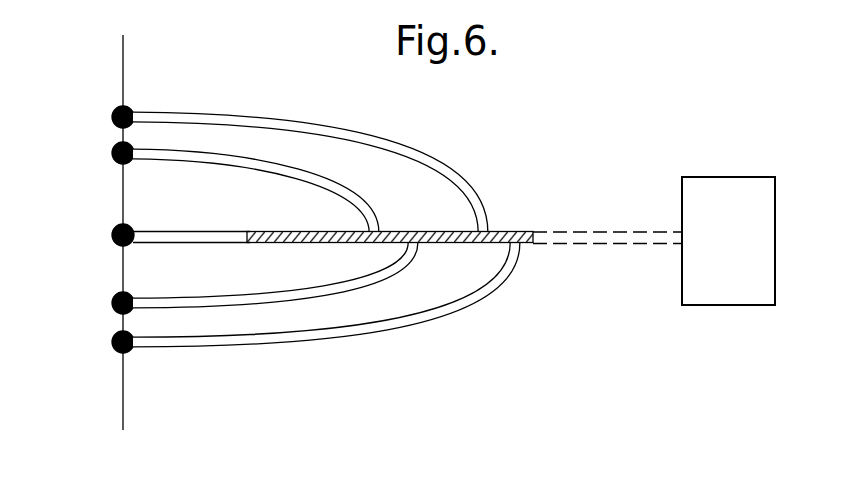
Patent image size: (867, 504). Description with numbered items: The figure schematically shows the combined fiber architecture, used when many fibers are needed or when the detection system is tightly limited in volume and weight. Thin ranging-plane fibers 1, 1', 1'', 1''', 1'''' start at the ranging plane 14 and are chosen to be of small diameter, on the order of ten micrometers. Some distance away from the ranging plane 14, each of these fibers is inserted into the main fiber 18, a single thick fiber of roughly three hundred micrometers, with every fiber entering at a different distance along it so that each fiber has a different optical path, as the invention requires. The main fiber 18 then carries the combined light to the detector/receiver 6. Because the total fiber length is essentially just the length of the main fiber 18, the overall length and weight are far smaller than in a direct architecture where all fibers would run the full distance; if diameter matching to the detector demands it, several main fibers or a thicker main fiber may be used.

The thin ranging-plane fiber 1 is at (333, 216).
The thin ranging-plane fiber 1' is at (253, 193).
The thin ranging-plane fiber 1'' is at (273, 273).
The thin ranging-plane fiber 1''' is at (308, 147).
The thin ranging-plane fiber 1'''' is at (324, 308).
The ranging plane 14 is at (118, 405).
The main fiber 18 is at (622, 232).
The detector/receiver 6 is at (737, 257).